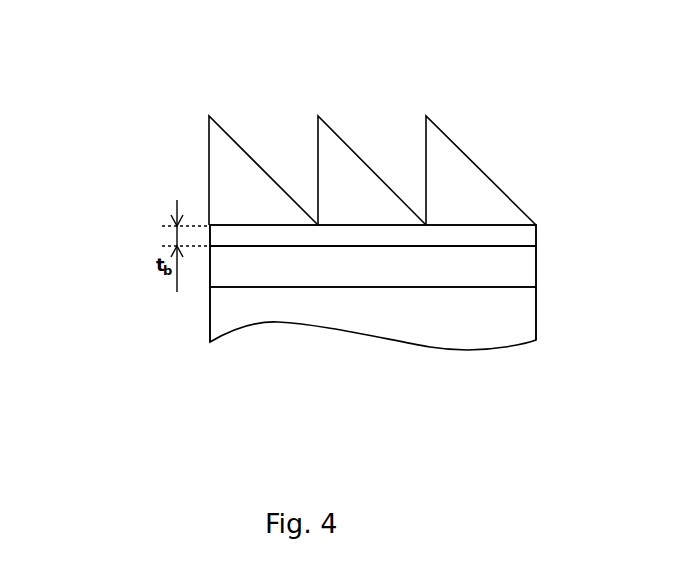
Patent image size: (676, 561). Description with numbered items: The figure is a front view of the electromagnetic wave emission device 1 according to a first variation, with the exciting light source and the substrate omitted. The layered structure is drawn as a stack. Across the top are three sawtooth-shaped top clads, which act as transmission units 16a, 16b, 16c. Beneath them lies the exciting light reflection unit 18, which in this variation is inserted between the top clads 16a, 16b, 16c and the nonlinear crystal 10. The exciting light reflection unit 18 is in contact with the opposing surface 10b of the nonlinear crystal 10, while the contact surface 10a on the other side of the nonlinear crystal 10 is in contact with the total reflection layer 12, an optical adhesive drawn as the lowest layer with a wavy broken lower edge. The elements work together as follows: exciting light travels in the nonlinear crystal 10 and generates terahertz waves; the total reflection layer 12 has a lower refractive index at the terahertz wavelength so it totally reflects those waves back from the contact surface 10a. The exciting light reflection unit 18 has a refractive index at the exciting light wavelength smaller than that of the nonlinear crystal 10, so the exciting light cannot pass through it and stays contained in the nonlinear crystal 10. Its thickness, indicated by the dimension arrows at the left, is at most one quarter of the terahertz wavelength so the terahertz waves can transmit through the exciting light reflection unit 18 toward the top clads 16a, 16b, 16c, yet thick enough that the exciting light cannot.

The electromagnetic wave emission device 1 is at (130, 99).
The top clad (transmission unit) 16a is at (209, 168).
The top clad (transmission unit) 16b is at (364, 164).
The top clad (transmission unit) 16c is at (489, 177).
The exciting light reflection unit 18 is at (537, 228).
The nonlinear crystal 10 is at (537, 262).
The contact surface 10a is at (374, 287).
The opposing surface 10b is at (420, 247).
The total reflection layer 12 is at (537, 307).